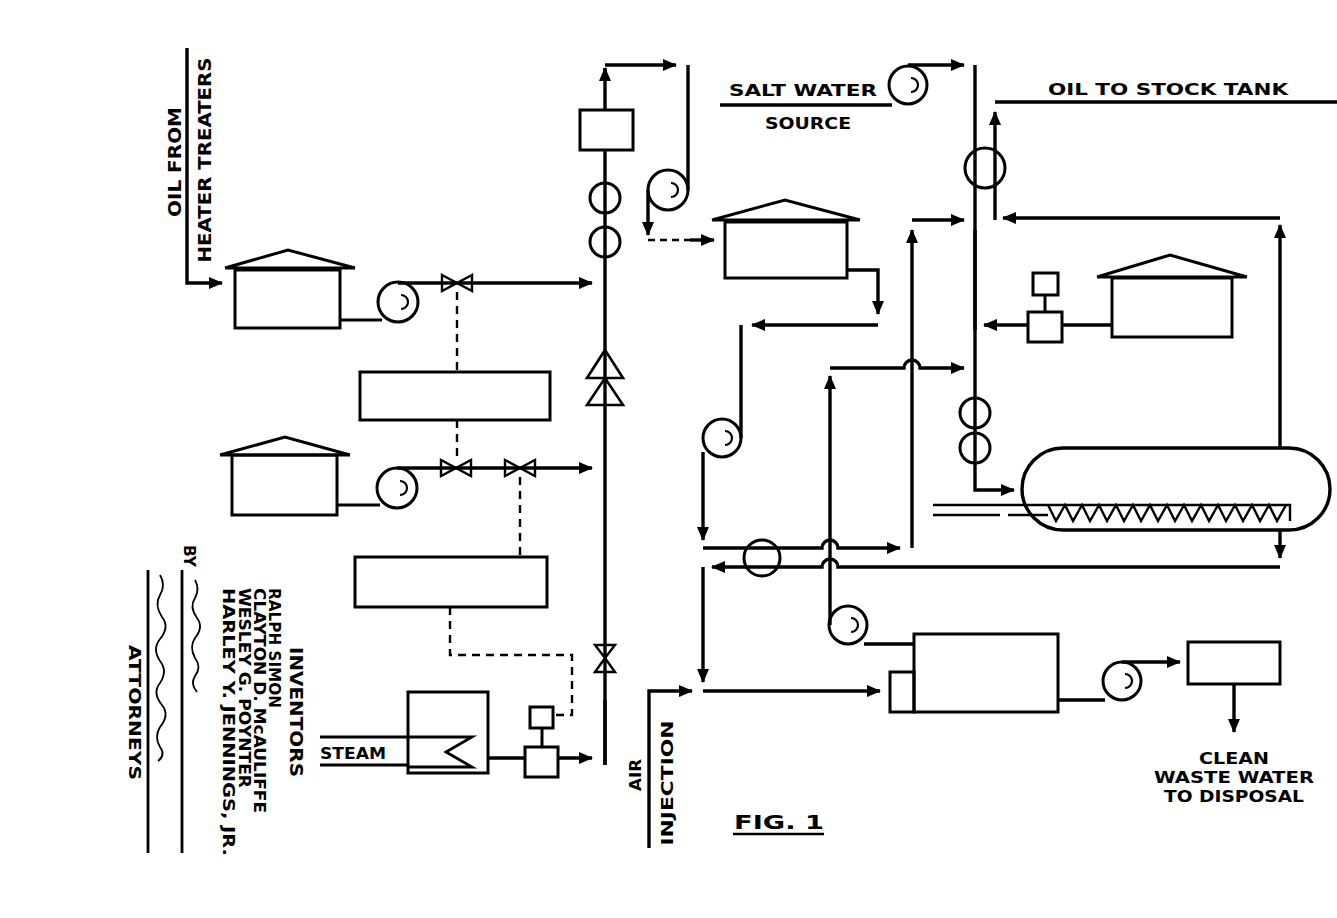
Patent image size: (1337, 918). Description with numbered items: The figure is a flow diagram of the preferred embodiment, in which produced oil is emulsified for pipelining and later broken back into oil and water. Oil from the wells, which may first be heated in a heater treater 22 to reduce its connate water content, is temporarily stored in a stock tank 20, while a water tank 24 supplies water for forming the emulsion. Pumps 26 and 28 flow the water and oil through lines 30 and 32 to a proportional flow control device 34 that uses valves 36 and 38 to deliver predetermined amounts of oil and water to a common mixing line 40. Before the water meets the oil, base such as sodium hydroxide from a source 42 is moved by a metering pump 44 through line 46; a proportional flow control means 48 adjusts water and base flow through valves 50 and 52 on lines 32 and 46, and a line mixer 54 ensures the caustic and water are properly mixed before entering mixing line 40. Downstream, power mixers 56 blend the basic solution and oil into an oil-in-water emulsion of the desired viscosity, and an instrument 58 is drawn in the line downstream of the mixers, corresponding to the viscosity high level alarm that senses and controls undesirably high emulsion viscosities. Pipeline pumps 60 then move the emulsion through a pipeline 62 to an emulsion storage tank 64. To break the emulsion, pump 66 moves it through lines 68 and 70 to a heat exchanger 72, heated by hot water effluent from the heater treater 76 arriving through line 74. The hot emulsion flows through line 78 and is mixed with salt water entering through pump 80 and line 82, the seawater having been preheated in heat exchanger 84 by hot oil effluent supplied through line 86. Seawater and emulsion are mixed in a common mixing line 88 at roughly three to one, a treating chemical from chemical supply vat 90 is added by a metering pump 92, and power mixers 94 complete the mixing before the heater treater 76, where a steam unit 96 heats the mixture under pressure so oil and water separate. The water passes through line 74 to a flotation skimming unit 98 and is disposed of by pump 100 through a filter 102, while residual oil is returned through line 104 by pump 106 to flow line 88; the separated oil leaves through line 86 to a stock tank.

The stock tank 20 is at (313, 258).
The heater treater 22 is at (200, 285).
The water tank 24 is at (258, 440).
The pump 26 is at (407, 323).
The pump 28 is at (407, 507).
The line 30 is at (425, 279).
The line 32 is at (427, 464).
The proportional flow control device 34 is at (512, 371).
The valve 36 is at (460, 276).
The valve 38 is at (456, 477).
The common mixing line 40 is at (612, 326).
The source of base 42 is at (435, 692).
The metering pump 44 is at (545, 779).
The line 46 is at (608, 700).
The proportional flow control means 48 is at (385, 609).
The valve 50 is at (522, 464).
The valve 52 is at (610, 653).
The line mixer 54 is at (620, 392).
The power mixers 56 is at (591, 242).
The control unit 58 is at (580, 130).
The pipeline pump 60 is at (667, 170).
The pipeline 62 is at (672, 251).
The emulsion storage tank 64 is at (815, 208).
The pump 66 is at (718, 419).
The line 68 is at (795, 329).
The line 70 is at (699, 501).
The heat exchanger 72 is at (762, 540).
The line 74 is at (1065, 570).
The heater treater 76 is at (1168, 447).
The line 78 is at (935, 218).
The pump 80 is at (925, 99).
The line 82 is at (984, 89).
The heat exchanger 84 is at (1007, 164).
The line 86 is at (1172, 216).
The common mixing line 88 is at (979, 271).
The chemical supply vat 90 is at (1195, 338).
The metering pump 92 is at (1045, 344).
The power mixers 94 is at (992, 447).
The steam unit 96 is at (975, 519).
The flotation skimming unit 98 is at (980, 634).
The pump 100 is at (1139, 696).
The filter 102 is at (1235, 642).
The line 104 is at (827, 441).
The pump 106 is at (833, 638).